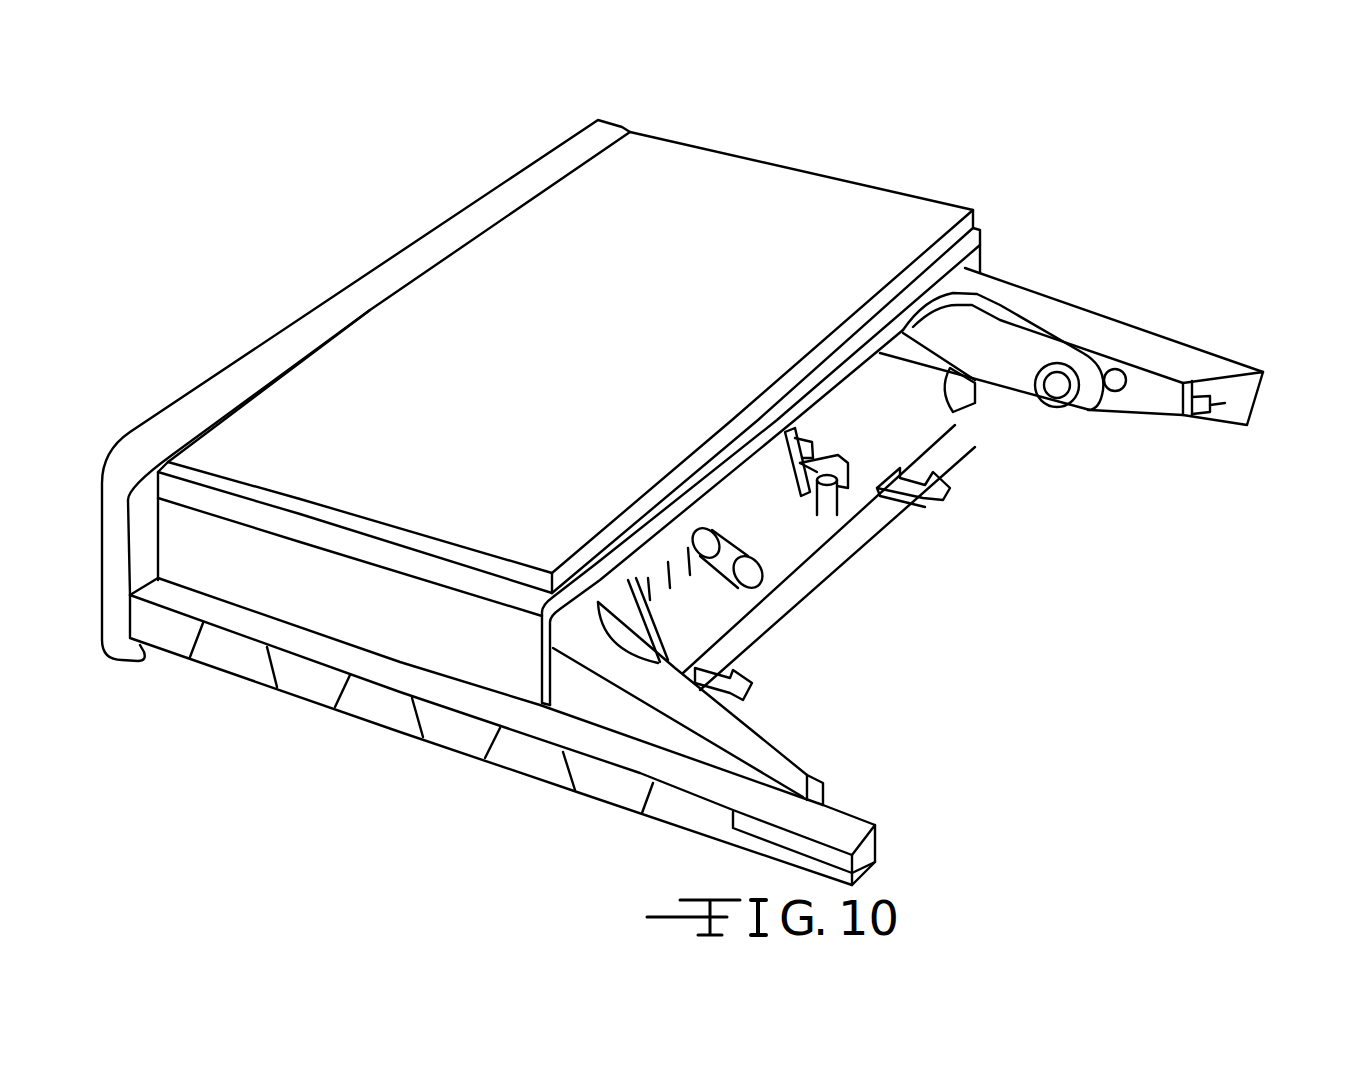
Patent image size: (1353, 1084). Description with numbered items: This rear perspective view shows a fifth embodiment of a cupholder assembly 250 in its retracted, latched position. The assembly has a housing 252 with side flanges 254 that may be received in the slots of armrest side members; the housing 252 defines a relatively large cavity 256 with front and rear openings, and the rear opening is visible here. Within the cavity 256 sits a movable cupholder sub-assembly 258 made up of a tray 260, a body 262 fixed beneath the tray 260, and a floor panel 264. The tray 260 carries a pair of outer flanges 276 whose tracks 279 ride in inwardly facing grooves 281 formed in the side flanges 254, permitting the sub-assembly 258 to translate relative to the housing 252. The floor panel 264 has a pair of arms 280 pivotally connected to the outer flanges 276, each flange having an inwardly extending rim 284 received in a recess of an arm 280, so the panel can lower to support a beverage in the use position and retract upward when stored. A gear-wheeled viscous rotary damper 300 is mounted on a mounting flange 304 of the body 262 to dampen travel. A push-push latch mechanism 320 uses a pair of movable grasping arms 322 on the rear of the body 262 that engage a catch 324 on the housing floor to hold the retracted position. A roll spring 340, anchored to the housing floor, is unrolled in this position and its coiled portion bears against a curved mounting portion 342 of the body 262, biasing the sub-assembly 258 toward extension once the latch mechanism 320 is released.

The cupholder assembly 250 is at (890, 158).
The housing 252 is at (403, 247).
The side flanges 254 is at (302, 683).
The cavity 256 is at (812, 457).
The cupholder sub-assembly 258 is at (1028, 279).
The tray 260 is at (640, 720).
The body 262 is at (897, 470).
The floor panel 264 is at (1013, 348).
The outer flanges 276 is at (985, 282).
The tracks 279 is at (1210, 402).
The arms 280 is at (975, 405).
The inwardly facing grooves 281 is at (1217, 410).
The inwardly extending rim 284 is at (1078, 389).
The viscous rotary damper 300 is at (765, 500).
The mounting flange 304 is at (790, 523).
The latch mechanism 320 is at (800, 460).
The grasping arms 322 is at (795, 468).
The catch 324 is at (822, 500).
The roll spring 340 is at (678, 638).
The curved mounting portion 342 is at (700, 530).